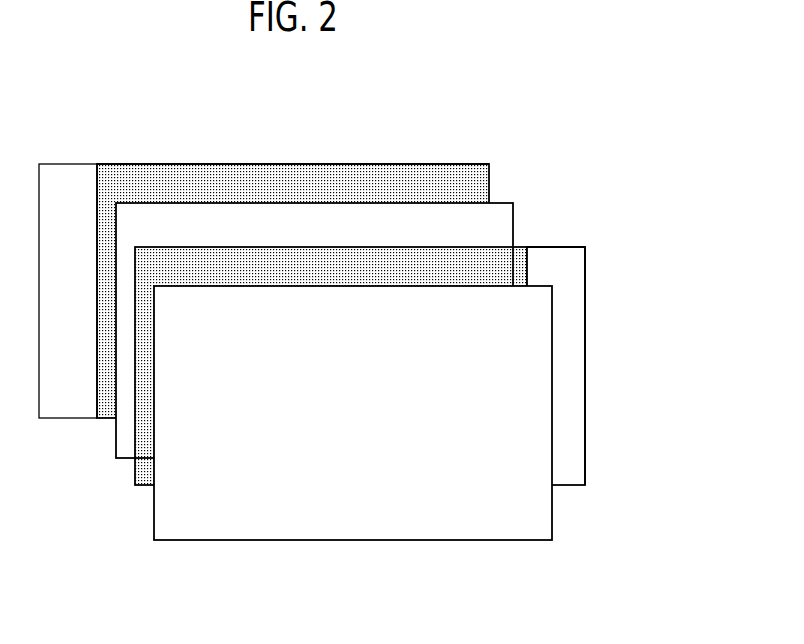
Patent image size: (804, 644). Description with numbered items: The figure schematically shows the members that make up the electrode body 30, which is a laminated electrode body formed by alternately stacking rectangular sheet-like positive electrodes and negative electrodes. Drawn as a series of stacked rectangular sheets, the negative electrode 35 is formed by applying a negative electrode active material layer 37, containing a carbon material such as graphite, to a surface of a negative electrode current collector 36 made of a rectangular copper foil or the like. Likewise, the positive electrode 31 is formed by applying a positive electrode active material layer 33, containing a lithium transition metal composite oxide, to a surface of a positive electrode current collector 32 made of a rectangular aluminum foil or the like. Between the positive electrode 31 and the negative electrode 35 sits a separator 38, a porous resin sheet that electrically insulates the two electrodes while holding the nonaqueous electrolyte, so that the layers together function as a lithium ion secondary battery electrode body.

The electrode body 30 is at (667, 93).
The positive electrode 31 is at (572, 246).
The positive electrode current collector 32 is at (586, 363).
The positive electrode active material layer 33 is at (141, 471).
The negative electrode 35 is at (415, 163).
The negative electrode current collector 36 is at (71, 162).
The negative electrode active material layer 37 is at (229, 172).
The separator 38 is at (506, 203).